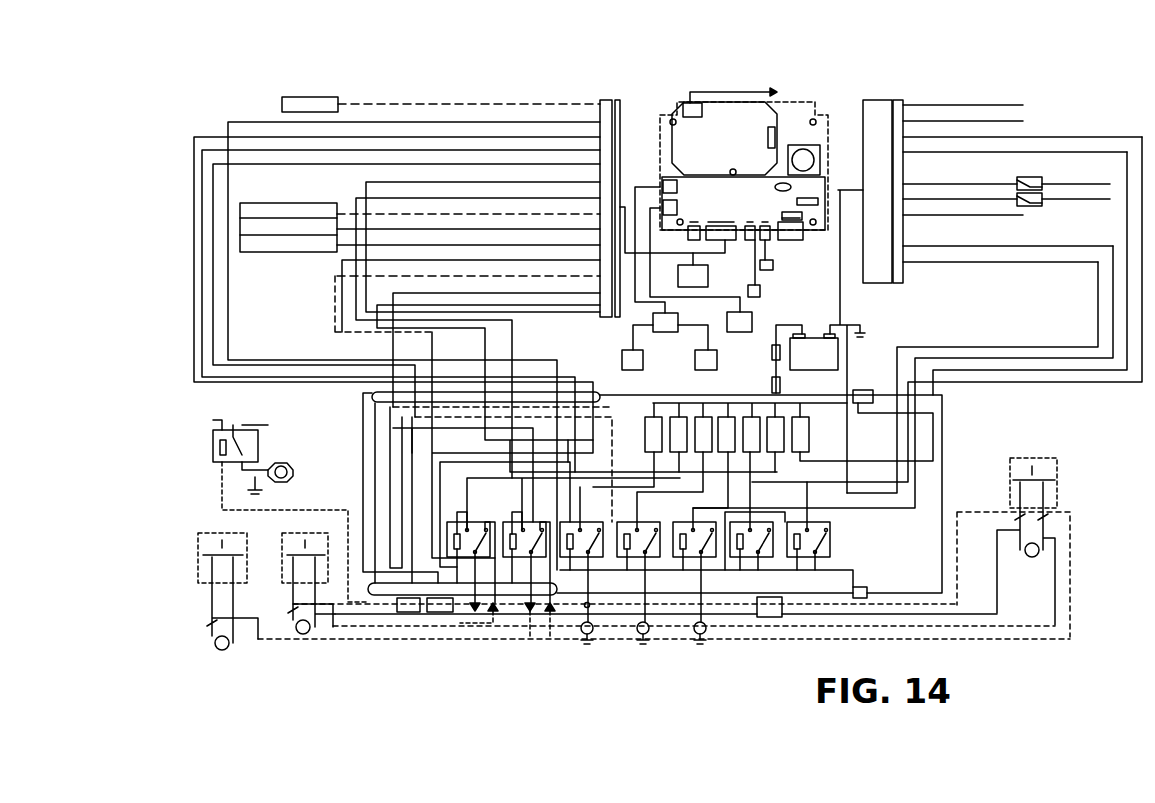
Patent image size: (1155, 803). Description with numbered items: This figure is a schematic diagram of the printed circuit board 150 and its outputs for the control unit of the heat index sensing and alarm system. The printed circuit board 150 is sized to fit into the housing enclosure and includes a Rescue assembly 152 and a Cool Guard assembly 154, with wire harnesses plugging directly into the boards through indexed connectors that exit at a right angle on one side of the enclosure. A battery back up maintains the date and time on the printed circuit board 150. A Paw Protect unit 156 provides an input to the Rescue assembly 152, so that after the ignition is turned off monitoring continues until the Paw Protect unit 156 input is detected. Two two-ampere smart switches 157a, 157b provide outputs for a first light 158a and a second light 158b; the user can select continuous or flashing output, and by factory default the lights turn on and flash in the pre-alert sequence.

The printed circuit board 150 is at (760, 131).
The Rescue assembly 152 is at (765, 112).
The Cool Guard assembly 154 is at (687, 180).
The Paw Protect unit 156 is at (694, 273).
The smart switch 157a is at (568, 552).
The smart switch 157b is at (656, 552).
The Light 1 158a is at (578, 637).
The Light 2 158b is at (655, 640).